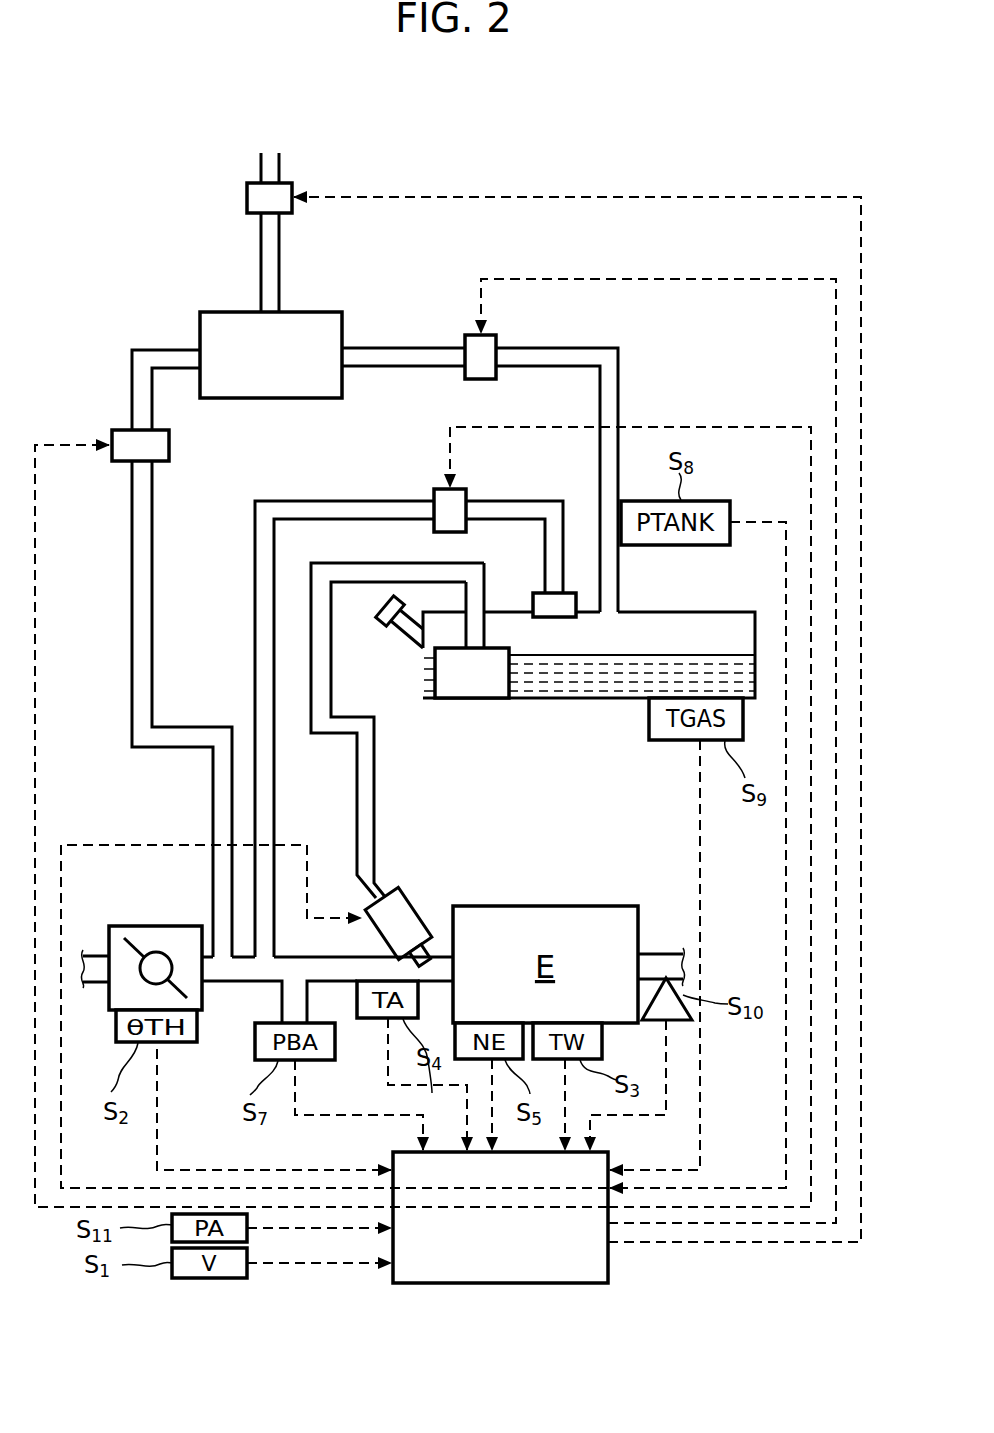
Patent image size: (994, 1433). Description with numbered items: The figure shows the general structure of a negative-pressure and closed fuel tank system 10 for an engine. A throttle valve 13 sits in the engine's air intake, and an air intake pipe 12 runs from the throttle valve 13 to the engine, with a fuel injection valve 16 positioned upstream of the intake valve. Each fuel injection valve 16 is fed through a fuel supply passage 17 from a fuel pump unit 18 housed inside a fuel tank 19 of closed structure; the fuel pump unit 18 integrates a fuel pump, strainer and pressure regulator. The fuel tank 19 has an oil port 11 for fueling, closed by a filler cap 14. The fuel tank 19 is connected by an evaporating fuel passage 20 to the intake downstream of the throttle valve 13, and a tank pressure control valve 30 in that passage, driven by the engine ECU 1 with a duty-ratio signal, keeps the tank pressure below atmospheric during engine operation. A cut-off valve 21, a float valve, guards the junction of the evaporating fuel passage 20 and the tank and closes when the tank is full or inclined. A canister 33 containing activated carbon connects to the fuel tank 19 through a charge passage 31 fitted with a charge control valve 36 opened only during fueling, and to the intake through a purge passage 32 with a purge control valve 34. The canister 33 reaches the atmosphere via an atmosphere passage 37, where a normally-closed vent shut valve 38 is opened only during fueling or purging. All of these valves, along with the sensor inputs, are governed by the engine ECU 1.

The engine ECU 1 is at (471, 902).
The negative-pressure and closed fuel tank system 10 is at (724, 176).
The oil port 11 is at (405, 636).
The air intake pipe 12 is at (231, 985).
The throttle valve 13 is at (143, 940).
The filler cap 14 is at (378, 621).
The fuel injection valve 16 is at (408, 896).
The fuel supply passage 17 is at (374, 823).
The fuel pump unit 18 is at (517, 678).
The fuel tank 19 is at (593, 699).
The evaporating fuel passage 20 is at (255, 595).
The cut-off valve 21 is at (538, 594).
The tank pressure control valve 30 is at (434, 490).
The charge passage 31 is at (618, 378).
The purge passage 32 is at (132, 386).
The canister 33 is at (311, 312).
The purge control valve 34 is at (169, 445).
The charge control valve 36 is at (470, 335).
The atmosphere passage 37 is at (261, 252).
The vent shut valve 38 is at (290, 183).